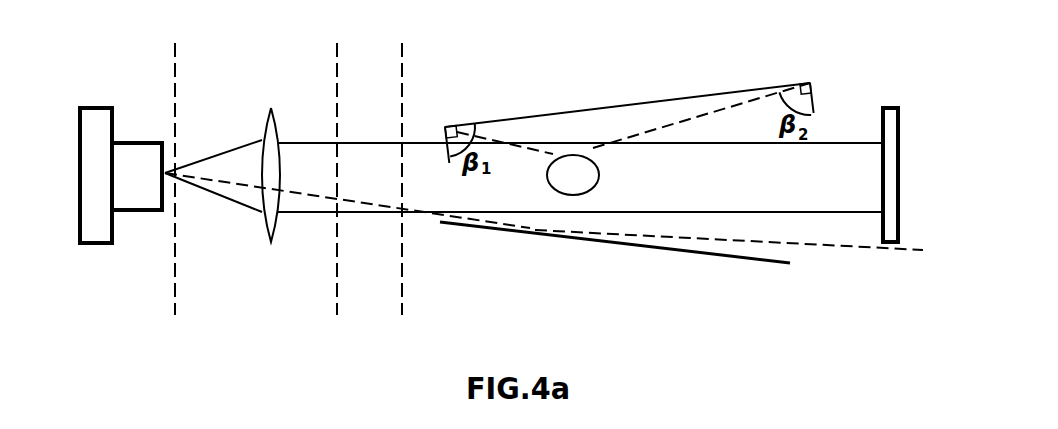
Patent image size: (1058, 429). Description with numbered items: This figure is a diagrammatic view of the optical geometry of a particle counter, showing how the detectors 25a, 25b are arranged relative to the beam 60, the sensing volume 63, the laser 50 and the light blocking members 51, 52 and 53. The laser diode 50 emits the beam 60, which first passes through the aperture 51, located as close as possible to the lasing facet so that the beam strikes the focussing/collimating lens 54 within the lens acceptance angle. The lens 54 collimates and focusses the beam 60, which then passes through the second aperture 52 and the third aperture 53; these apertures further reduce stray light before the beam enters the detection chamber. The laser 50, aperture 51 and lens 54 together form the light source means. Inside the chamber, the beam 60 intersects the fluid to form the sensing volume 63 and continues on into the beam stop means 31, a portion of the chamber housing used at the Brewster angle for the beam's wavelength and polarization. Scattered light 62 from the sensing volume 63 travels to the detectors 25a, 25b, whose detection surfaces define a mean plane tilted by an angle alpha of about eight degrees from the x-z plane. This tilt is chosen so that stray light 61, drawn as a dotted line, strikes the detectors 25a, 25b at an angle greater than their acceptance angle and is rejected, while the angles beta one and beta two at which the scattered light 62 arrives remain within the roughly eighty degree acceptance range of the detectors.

The laser diode 50 is at (128, 147).
The aperture 51 is at (175, 280).
The second aperture 52 is at (337, 253).
The third aperture 53 is at (403, 248).
The focussing/collimating lens 54 is at (267, 112).
The beam 60 is at (832, 155).
The stray light 61 is at (858, 250).
The scattered light 62 is at (517, 140).
The sensing volume 63 is at (562, 183).
The detector 25a is at (662, 248).
The detector 25b is at (592, 108).
The beam stop means 31 is at (887, 110).